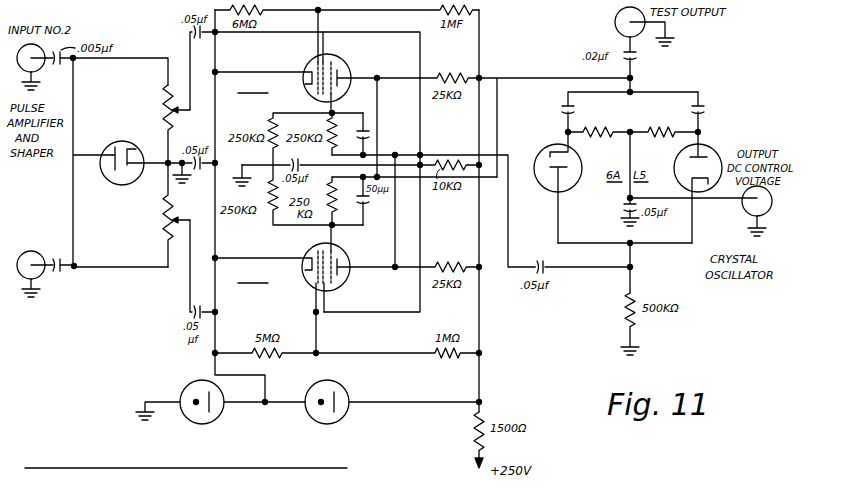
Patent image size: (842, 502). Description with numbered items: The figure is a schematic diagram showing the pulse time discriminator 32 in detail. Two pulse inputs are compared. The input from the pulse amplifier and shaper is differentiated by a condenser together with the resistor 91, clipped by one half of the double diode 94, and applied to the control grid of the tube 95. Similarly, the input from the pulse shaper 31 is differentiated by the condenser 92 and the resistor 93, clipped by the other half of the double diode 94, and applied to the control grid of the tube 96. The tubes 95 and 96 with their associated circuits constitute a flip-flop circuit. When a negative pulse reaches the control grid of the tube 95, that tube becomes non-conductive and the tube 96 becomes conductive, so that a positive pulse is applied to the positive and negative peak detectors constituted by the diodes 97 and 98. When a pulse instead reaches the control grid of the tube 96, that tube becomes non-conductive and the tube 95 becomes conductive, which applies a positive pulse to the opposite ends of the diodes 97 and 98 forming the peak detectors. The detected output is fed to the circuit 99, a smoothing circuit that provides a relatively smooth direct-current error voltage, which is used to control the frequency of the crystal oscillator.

The pulse shaper 31 is at (67, 307).
The pulse time discriminator 32 is at (252, 424).
The resistor 91 is at (194, 165).
The condenser 92 is at (80, 271).
The resistor 93 is at (170, 245).
The double diode 94 is at (142, 142).
The tube 95 is at (305, 63).
The tube 96 is at (309, 248).
The diode 97 is at (572, 186).
The diode 98 is at (676, 198).
The smoothing circuit 99 is at (660, 117).